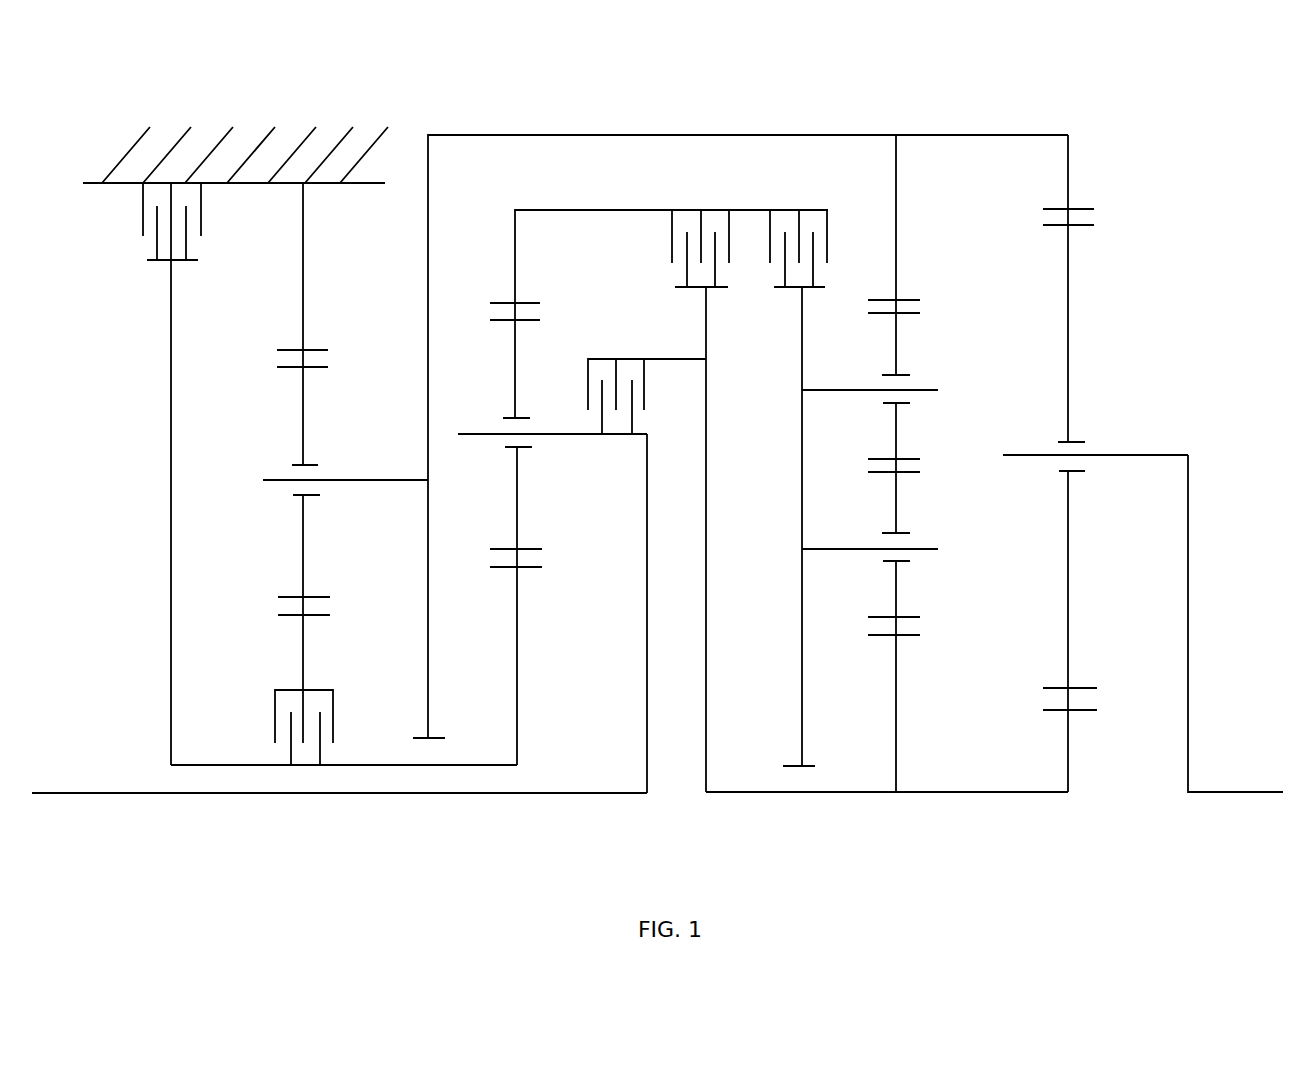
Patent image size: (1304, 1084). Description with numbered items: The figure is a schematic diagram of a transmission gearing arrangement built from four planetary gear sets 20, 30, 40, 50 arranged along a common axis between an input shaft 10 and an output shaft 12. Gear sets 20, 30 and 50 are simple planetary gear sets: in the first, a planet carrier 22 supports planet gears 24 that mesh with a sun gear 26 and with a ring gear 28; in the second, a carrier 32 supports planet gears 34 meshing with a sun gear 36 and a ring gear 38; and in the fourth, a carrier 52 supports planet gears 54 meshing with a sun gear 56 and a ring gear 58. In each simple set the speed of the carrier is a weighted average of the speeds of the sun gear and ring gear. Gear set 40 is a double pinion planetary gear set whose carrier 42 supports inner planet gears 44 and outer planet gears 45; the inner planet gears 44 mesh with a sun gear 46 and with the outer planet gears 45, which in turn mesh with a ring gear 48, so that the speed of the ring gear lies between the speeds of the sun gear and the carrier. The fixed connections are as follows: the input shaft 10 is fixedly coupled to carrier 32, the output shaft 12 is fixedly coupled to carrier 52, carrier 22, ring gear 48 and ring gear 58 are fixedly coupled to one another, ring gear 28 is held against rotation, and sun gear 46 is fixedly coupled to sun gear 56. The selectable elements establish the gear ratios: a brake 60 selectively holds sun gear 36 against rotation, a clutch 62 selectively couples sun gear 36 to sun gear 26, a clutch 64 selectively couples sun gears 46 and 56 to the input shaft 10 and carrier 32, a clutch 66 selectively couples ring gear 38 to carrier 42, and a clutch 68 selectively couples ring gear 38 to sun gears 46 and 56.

The input shaft 10 is at (165, 793).
The output shaft 12 is at (1245, 791).
The planetary gear set 20 is at (344, 514).
The planet carrier 22 is at (428, 460).
The planet gears 24 is at (307, 423).
The sun gear 26 is at (305, 653).
The ring gear 28 is at (302, 313).
The planetary gear set 30 is at (552, 644).
The planet carrier 32 is at (647, 505).
The planet gears 34 is at (517, 377).
The sun gear 36 is at (517, 607).
The ring gear 38 is at (515, 267).
The double pinion planetary gear set 40 is at (805, 568).
The planet carrier 42 is at (802, 497).
The inner planet gears 44 is at (895, 513).
The outer planet gears 45 is at (897, 350).
The sun gear 46 is at (893, 698).
The ring gear 48 is at (895, 257).
The planetary gear set 50 is at (896, 822).
The planet carrier 52 is at (1163, 455).
The planet gears 54 is at (1072, 392).
The sun gear 56 is at (1068, 753).
The ring gear 58 is at (1067, 182).
The brake 60 is at (142, 210).
The clutch 62 is at (333, 723).
The clutch 64 is at (645, 376).
The clutch 66 is at (827, 248).
The clutch 68 is at (670, 233).